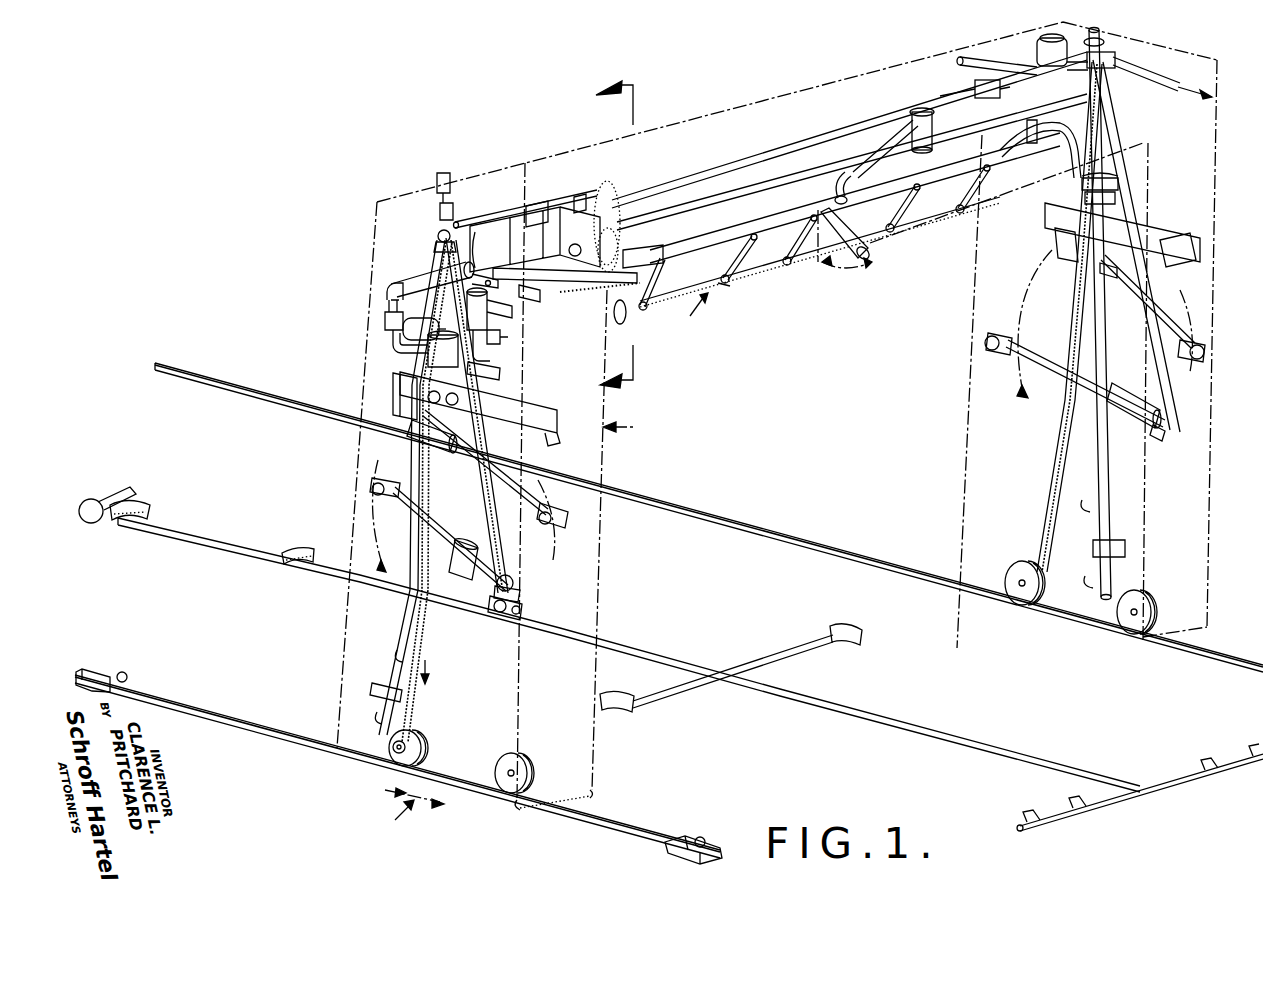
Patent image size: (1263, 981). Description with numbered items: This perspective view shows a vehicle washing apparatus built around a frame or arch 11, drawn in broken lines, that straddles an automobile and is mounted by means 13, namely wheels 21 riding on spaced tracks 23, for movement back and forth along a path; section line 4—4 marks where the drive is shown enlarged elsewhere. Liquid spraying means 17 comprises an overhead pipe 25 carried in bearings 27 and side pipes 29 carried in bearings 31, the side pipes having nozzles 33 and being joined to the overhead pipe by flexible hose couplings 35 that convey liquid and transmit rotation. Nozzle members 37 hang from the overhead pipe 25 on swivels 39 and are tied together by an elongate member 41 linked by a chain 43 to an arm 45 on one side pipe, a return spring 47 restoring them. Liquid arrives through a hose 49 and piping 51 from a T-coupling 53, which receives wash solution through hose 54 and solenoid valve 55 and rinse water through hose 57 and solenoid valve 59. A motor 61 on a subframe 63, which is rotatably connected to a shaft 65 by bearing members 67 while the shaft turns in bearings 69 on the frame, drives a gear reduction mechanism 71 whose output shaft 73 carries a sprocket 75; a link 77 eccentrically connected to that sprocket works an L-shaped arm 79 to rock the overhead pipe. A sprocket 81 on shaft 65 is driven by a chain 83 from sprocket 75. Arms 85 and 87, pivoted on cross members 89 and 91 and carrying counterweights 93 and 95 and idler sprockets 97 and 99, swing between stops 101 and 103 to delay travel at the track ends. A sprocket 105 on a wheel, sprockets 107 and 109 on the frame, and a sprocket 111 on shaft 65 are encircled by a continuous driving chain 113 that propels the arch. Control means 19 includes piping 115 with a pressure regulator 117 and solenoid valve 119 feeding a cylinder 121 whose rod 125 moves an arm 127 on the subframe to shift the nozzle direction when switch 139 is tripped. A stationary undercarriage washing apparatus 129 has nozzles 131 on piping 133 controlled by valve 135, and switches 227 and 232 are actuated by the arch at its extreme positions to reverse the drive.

The section line 4— 4 is at (614, 236).
The frame or arch 11 is at (631, 430).
The mounting means 13 is at (408, 811).
The liquid spraying means 17 is at (820, 263).
The control means 19 is at (542, 305).
The wheels 21 is at (422, 750).
The tracks 23 is at (612, 822).
The overhead pipe 25 is at (852, 194).
The bearings 27 is at (668, 256).
The side pipes 29 is at (442, 505).
The bearings 31 is at (490, 374).
The nozzles 33 is at (1085, 430).
The flexible hose coupling 35 is at (503, 337).
The nozzle members 37 is at (740, 270).
The swivels 39 is at (757, 236).
The elongate member 41 is at (892, 224).
The chain 43 is at (972, 213).
The arm 45 is at (1120, 182).
The return spring 47 is at (598, 296).
The hose 49 is at (875, 143).
The piping 51 is at (784, 187).
The T-coupling 53 is at (1106, 36).
The hose 54 is at (1178, 70).
The solenoid-operated valve 55 is at (1118, 60).
The hose 57 is at (968, 65).
The solenoid-operated valve 59 is at (1037, 52).
The motor 61 is at (507, 222).
The subframe 63 is at (548, 192).
The shaft 65 is at (728, 168).
The bearing members 67 is at (580, 195).
The bearings 69 is at (975, 88).
The gear reduction mechanism 71 is at (583, 285).
The output shaft 73 is at (612, 250).
The sprocket 75 is at (625, 215).
The link 77 is at (652, 254).
The L-shaped arm 79 is at (622, 310).
The sprocket 81 is at (612, 185).
The chain 83 is at (625, 200).
The arm 85 is at (462, 560).
The arm 87 is at (530, 497).
The cross member 89 is at (372, 490).
The cross member 91 is at (566, 515).
The counterweight 93 is at (514, 584).
The counterweight 95 is at (445, 440).
The idler sprocket 97 is at (496, 618).
The idler sprocket 99 is at (430, 421).
The stop 101 is at (552, 432).
The stop 103 is at (393, 392).
The sprocket 105 is at (396, 752).
The sprocket 107 is at (393, 362).
The sprocket 109 is at (410, 428).
The sprocket 111 is at (438, 233).
The continuous driving chain 113 is at (434, 248).
The piping 115 is at (385, 322).
The pressure regulator 117 is at (393, 340).
The solenoid-operated valve 119 is at (387, 310).
The cylinder 121 is at (410, 278).
The rod 125 is at (505, 315).
The arm 127 is at (440, 262).
The undercarriage washing apparatus 129 is at (818, 691).
The nozzles 131 is at (140, 507).
The piping 133 is at (205, 547).
The valve 135 is at (90, 498).
The switch 139 is at (449, 166).
The double-pole double-throw switch 227 is at (686, 840).
The double-pole double-throw switch 232 is at (126, 675).